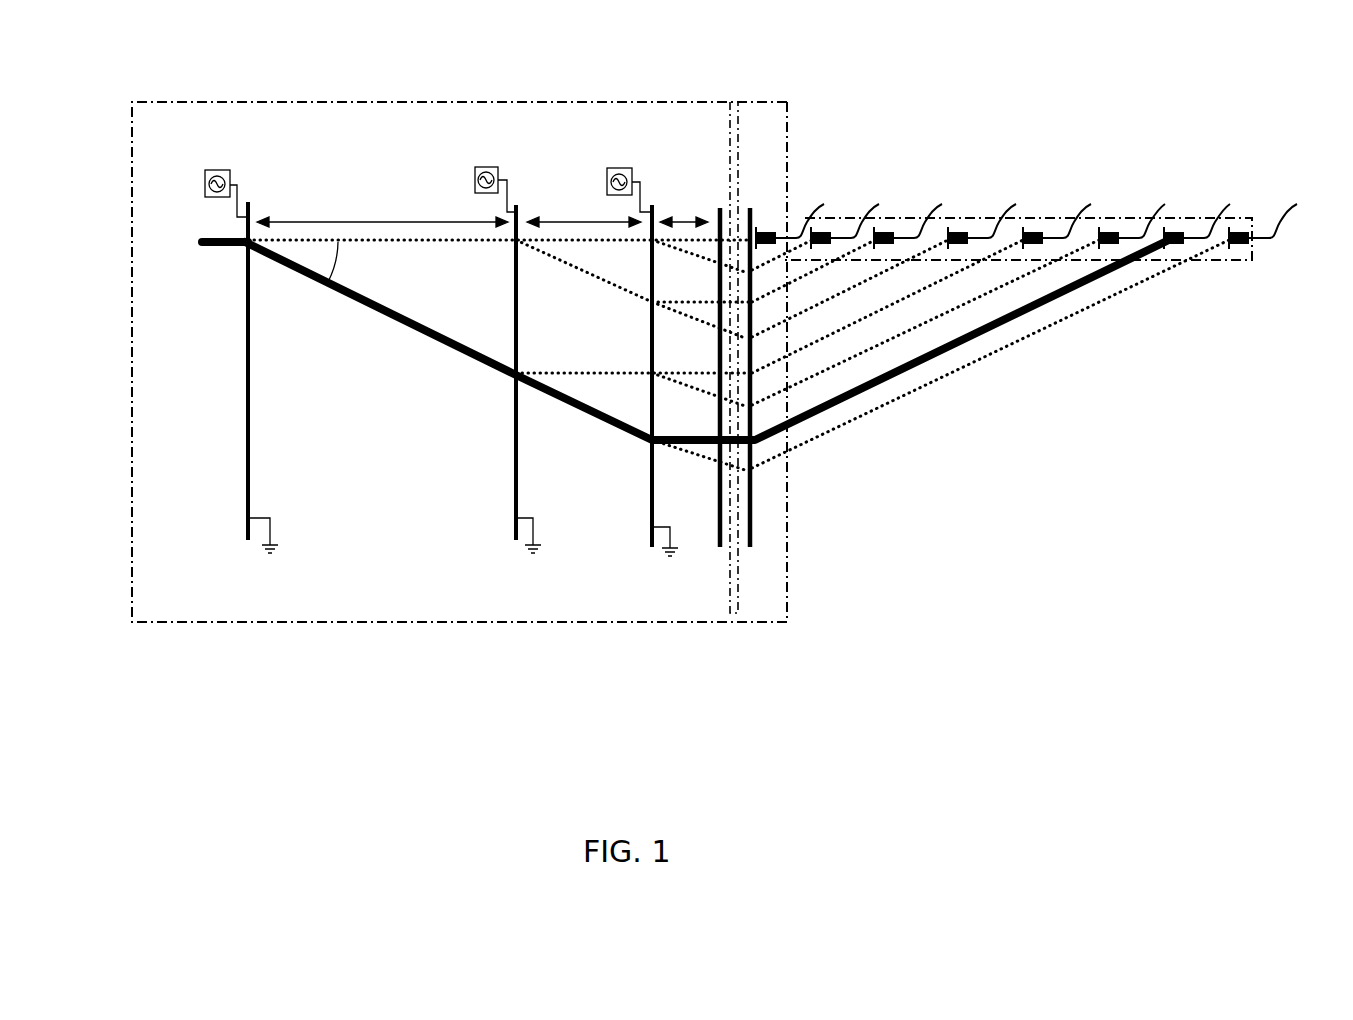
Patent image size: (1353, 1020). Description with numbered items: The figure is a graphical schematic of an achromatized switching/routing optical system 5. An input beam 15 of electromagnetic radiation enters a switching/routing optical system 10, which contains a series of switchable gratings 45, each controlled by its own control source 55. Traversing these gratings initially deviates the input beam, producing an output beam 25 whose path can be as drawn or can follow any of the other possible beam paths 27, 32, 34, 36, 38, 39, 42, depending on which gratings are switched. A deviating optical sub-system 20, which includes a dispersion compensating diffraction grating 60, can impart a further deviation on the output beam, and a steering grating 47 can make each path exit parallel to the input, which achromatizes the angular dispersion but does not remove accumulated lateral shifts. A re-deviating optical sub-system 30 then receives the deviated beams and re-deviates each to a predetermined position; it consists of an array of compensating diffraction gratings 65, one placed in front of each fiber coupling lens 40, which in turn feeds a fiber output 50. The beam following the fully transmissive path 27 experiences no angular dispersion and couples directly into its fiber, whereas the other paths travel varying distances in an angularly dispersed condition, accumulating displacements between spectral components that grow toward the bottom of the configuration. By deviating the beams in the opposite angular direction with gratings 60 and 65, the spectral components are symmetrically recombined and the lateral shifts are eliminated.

The achromatized switching/routing optical system 5 is at (272, 752).
The switching/routing optical system 10 is at (553, 623).
The input beam 15 is at (223, 248).
The deviating optical sub-system 20 is at (750, 523).
The output beam 25 is at (688, 446).
The beam path in transmissive state 27 is at (738, 212).
The re-deviating optical sub-system 30 is at (1118, 217).
The beam path 32 is at (803, 447).
The beam path 34 is at (1040, 268).
The beam path 36 is at (960, 268).
The beam path 38 is at (890, 268).
The beam path 39 is at (800, 247).
The fiber coupling lens 40 is at (1180, 242).
The beam path 42 is at (810, 272).
The switchable grating 45 is at (252, 430).
The steering grating 47 is at (718, 524).
The fiber output 50 is at (1230, 212).
The control source 55 is at (491, 167).
The dispersion compensating diffraction grating 60 is at (787, 490).
The compensating diffraction grating 65 is at (1165, 233).